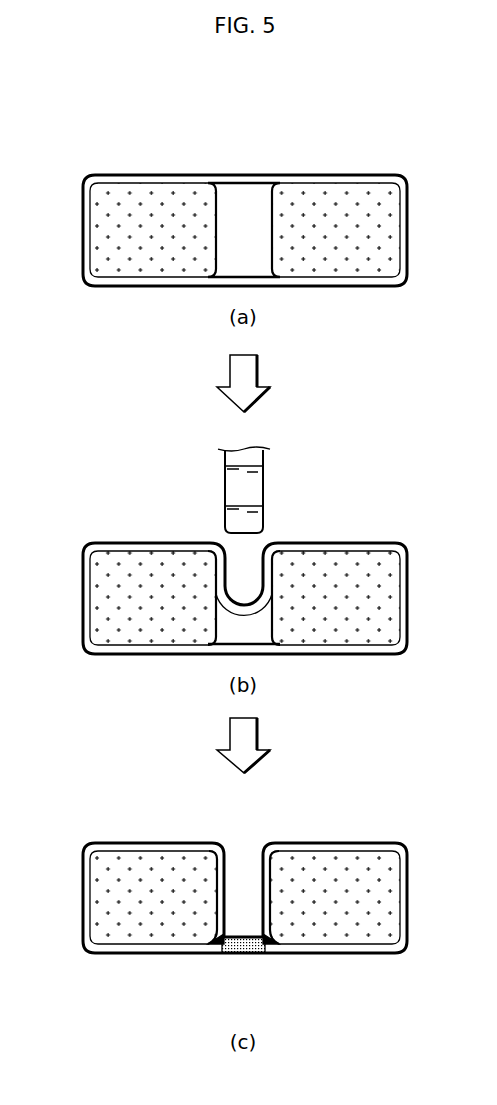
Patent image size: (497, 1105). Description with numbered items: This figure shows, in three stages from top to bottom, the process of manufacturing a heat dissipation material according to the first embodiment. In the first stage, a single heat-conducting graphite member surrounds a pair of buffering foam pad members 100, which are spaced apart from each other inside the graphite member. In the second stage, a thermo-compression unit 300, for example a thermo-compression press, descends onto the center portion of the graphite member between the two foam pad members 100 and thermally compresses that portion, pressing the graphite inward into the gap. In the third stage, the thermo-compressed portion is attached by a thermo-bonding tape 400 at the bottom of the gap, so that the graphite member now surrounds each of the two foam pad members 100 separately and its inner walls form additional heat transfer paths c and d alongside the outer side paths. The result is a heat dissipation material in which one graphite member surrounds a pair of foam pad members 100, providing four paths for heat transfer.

The foam pad member 100 is at (333, 123).
The thermo-compression unit 300 is at (264, 481).
The thermo-bonding tape 400 is at (243, 953).
The heat transfer path c is at (232, 877).
The heat transfer path d is at (252, 877).